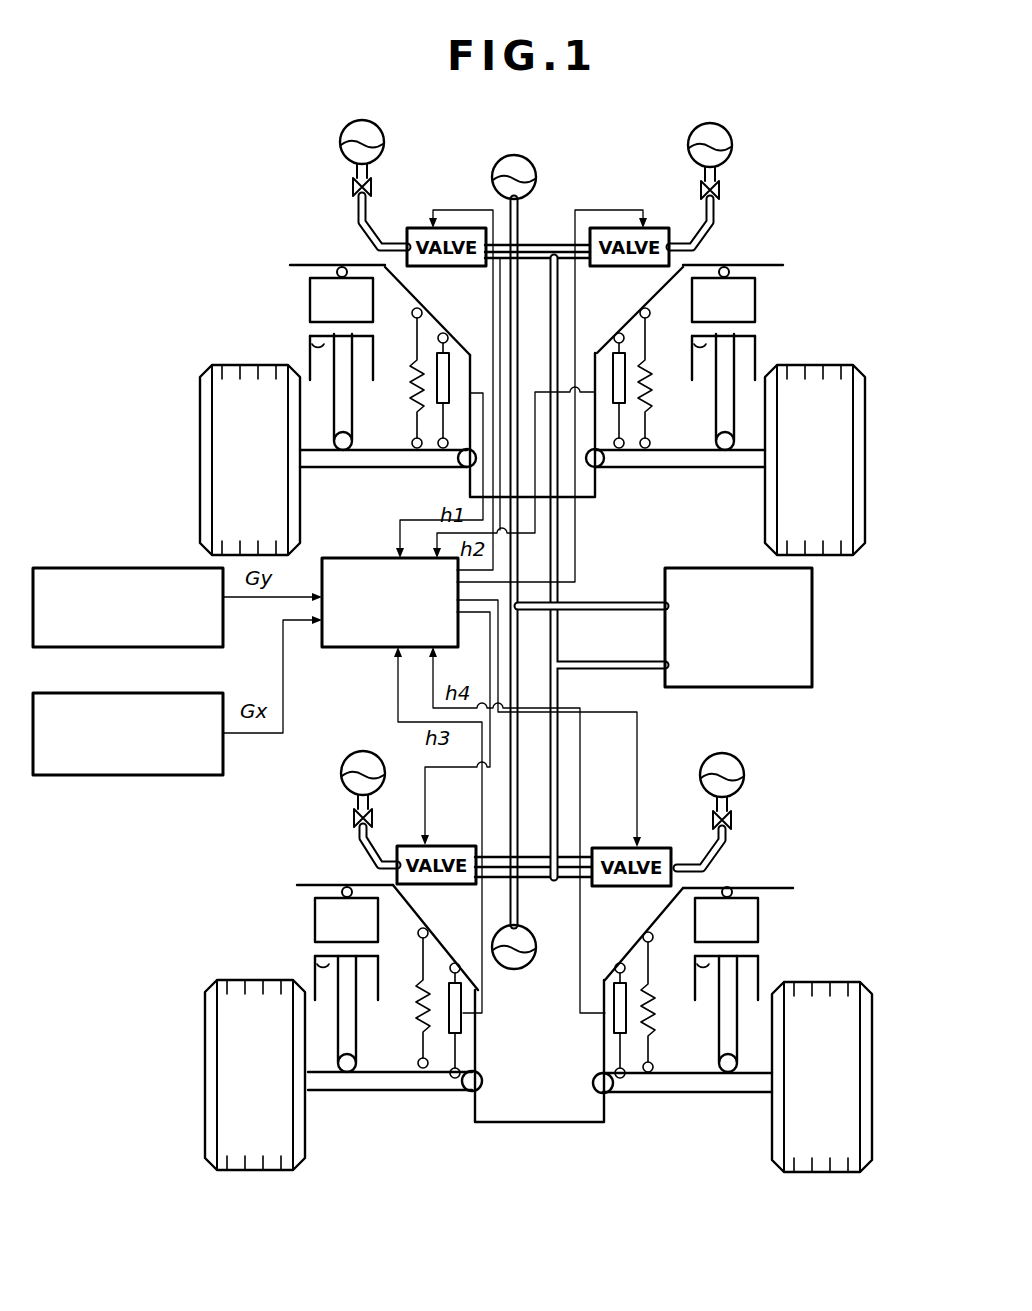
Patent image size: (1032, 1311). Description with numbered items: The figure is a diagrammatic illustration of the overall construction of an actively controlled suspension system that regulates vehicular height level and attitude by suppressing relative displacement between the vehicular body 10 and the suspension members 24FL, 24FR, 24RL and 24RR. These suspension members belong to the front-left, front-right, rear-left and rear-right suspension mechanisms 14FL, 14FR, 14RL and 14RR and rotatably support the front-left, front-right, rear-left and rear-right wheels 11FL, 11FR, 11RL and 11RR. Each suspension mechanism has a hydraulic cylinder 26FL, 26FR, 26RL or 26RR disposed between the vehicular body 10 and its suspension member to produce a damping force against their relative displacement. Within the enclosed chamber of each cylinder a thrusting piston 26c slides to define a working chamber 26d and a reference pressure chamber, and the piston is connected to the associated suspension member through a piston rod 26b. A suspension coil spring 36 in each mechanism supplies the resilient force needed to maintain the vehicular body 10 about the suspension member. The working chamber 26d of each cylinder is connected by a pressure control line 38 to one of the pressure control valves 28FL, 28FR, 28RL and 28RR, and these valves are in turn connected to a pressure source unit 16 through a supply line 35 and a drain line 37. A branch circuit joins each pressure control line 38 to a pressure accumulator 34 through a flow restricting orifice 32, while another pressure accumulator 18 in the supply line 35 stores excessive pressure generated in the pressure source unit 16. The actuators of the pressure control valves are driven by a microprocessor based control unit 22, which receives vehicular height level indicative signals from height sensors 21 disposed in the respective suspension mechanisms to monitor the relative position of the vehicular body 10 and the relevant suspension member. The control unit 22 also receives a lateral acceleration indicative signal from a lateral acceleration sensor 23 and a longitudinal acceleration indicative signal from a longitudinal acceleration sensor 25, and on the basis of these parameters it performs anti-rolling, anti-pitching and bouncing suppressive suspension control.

The vehicular body 10 is at (592, 500).
The front-left wheel 11FL is at (228, 438).
The front-right wheel 11FR is at (835, 415).
The rear-left wheel 11RL is at (232, 1060).
The rear-right wheel 11RR is at (838, 1135).
The front-left suspension mechanism 14FL is at (310, 298).
The front-right suspension mechanism 14FR is at (755, 301).
The rear-left suspension mechanism 14RL is at (315, 927).
The rear-right suspension mechanism 14RR is at (763, 933).
The pressure source unit 16 is at (812, 600).
The pressure accumulator 18 is at (530, 160).
The vehicular height sensor 21 is at (450, 360).
The control unit 22 is at (357, 647).
The lateral acceleration sensor 23 is at (140, 568).
The front-left suspension member 24FL is at (403, 467).
The front-right suspension member 24FR is at (683, 467).
The rear-left suspension member 24RL is at (410, 1090).
The rear-right suspension member 24RR is at (672, 1092).
The longitudinal acceleration sensor 25 is at (163, 775).
The front-left hydraulic cylinder 26FL is at (290, 263).
The front-right hydraulic cylinder 26FR is at (750, 265).
The rear-left hydraulic cylinder 26RL is at (297, 884).
The rear-right hydraulic cylinder 26RR is at (760, 888).
The piston rod 26b is at (336, 445).
The thrusting piston 26c is at (317, 345).
The working chamber 26d is at (375, 306).
The front-left pressure control valve 28FL is at (415, 228).
The front-right pressure control valve 28FR is at (660, 228).
The rear-left pressure control valve 28RL is at (400, 845).
The rear-right pressure control valve 28RR is at (665, 848).
The orifice 32 is at (352, 188).
The pressure accumulator 34 is at (380, 130).
The supply line 35 is at (600, 602).
The suspension coil spring 36 is at (410, 388).
The drain line 37 is at (600, 664).
The pressure control line 38 is at (368, 248).